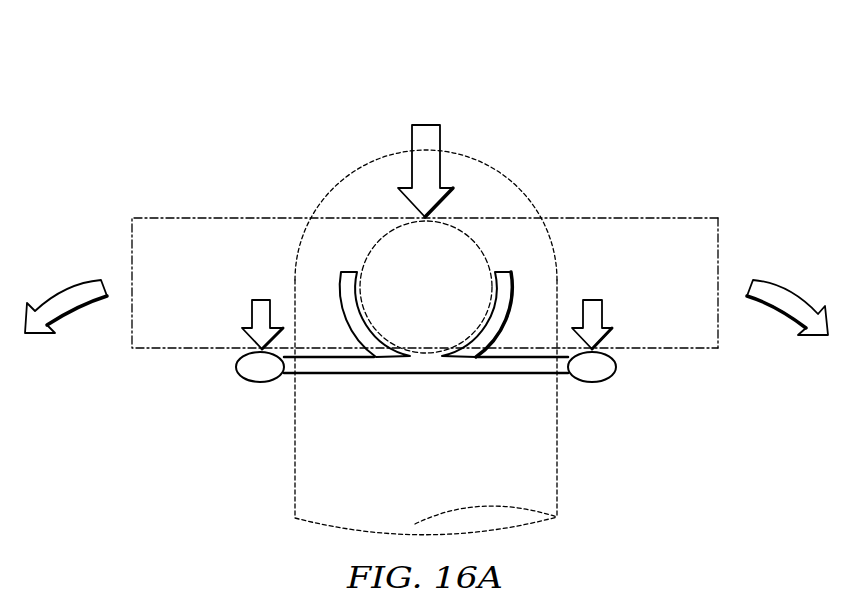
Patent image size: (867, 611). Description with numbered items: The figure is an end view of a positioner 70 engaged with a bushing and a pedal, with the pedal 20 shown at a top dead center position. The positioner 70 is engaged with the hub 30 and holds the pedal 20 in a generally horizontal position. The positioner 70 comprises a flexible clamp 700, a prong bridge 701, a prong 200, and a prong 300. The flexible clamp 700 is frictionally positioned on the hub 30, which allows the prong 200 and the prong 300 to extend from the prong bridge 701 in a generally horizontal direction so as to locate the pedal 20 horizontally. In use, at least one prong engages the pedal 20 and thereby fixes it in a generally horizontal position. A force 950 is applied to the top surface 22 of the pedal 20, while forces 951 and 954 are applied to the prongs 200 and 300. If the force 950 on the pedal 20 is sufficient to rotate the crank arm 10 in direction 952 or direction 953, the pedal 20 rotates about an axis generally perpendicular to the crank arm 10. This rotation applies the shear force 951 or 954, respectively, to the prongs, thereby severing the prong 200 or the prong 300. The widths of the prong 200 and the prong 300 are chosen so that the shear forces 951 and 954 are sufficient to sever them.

The positioner 70 is at (297, 76).
The crank arm 10 is at (294, 488).
The pedal 20 is at (220, 241).
The top surface 22 is at (630, 218).
The hub 30 is at (373, 247).
The flexible clamp 700 is at (517, 293).
The prong bridge 701 is at (363, 380).
The prong 300 is at (263, 384).
The prong 200 is at (593, 384).
The force 950 is at (412, 142).
The shear force 951 is at (253, 311).
The shear force 954 is at (603, 311).
The direction 953 is at (75, 285).
The direction 952 is at (780, 283).